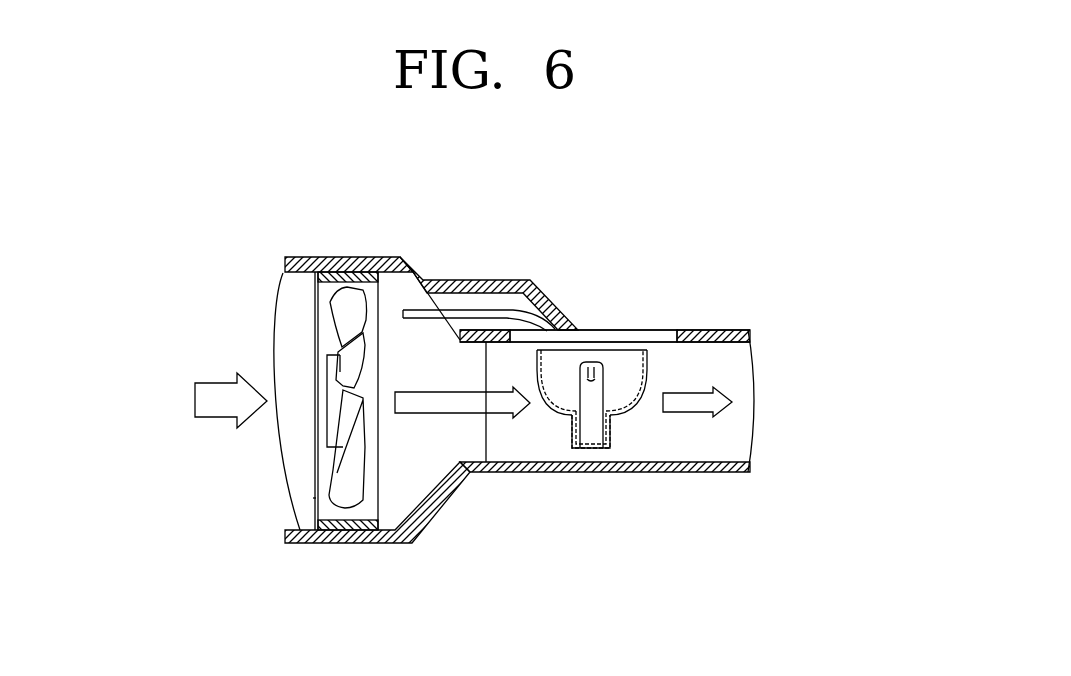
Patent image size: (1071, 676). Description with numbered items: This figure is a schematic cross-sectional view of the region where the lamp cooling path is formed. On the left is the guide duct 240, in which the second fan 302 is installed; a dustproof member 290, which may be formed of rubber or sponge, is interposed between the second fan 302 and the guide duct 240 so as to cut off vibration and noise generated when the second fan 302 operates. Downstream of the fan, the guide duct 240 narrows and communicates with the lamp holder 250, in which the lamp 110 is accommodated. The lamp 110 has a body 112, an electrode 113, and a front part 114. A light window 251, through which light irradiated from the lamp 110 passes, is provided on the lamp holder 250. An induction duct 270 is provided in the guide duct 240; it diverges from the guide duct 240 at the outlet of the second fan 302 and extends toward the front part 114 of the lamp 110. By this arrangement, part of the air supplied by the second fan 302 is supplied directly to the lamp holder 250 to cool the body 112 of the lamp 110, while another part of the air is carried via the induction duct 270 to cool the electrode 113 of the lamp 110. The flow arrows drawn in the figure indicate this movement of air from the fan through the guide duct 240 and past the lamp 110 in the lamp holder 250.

The lamp 110 is at (641, 392).
The body of the lamp 112 is at (637, 405).
The electrode of the lamp 113 is at (590, 362).
The front part of the lamp 114 is at (637, 343).
The guide duct 240 is at (357, 544).
The lamp holder 250 is at (547, 472).
The light window 251 is at (613, 333).
The induction duct 270 is at (487, 280).
The dustproof member 290 is at (283, 273).
The second fan 302 is at (316, 498).